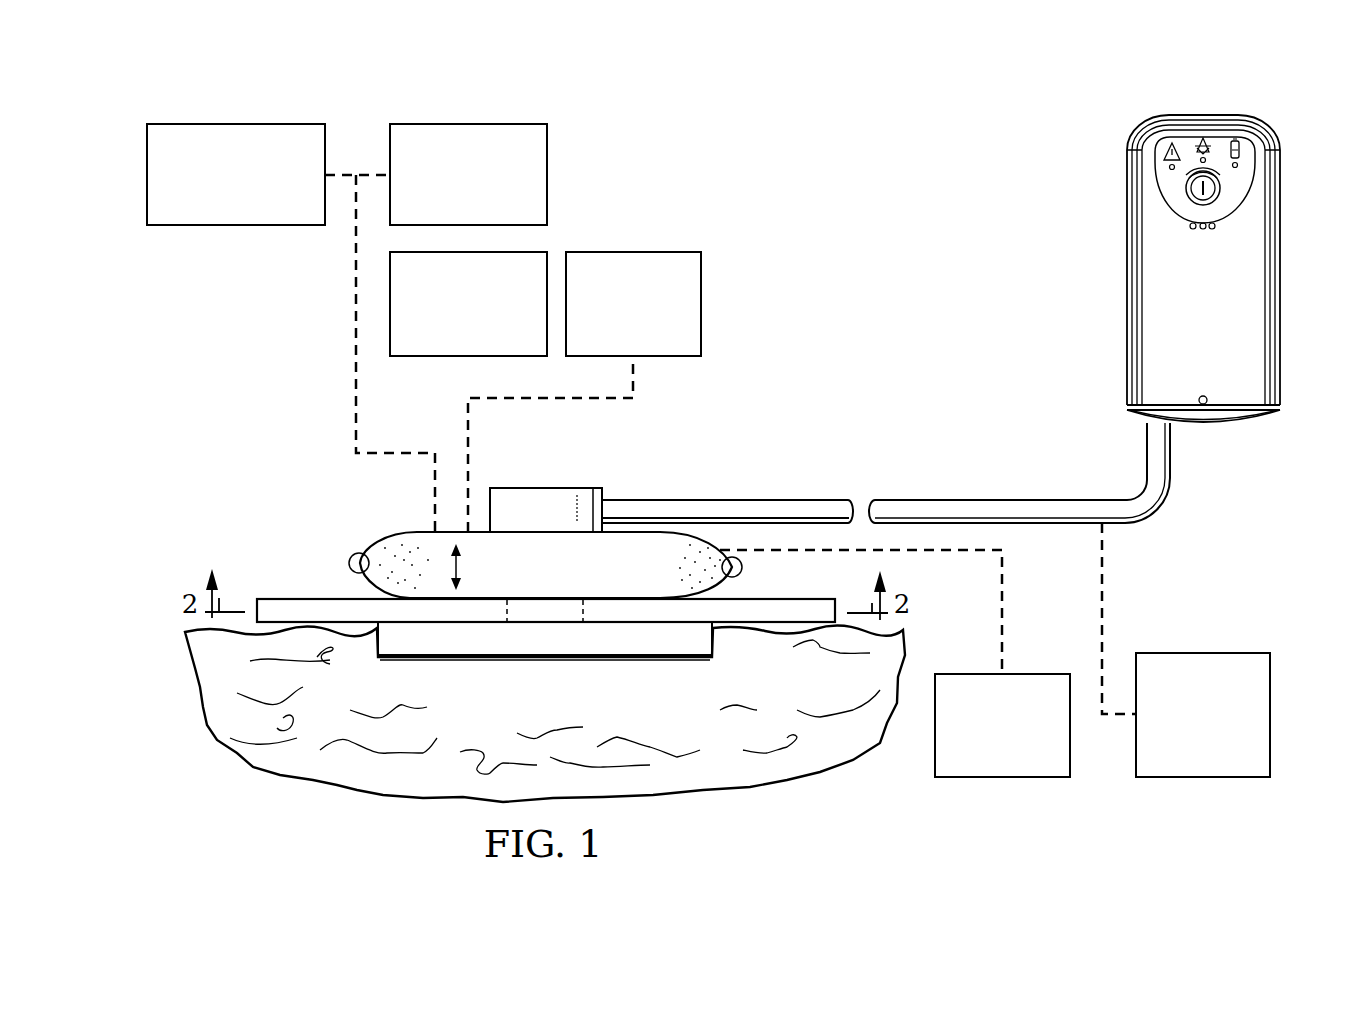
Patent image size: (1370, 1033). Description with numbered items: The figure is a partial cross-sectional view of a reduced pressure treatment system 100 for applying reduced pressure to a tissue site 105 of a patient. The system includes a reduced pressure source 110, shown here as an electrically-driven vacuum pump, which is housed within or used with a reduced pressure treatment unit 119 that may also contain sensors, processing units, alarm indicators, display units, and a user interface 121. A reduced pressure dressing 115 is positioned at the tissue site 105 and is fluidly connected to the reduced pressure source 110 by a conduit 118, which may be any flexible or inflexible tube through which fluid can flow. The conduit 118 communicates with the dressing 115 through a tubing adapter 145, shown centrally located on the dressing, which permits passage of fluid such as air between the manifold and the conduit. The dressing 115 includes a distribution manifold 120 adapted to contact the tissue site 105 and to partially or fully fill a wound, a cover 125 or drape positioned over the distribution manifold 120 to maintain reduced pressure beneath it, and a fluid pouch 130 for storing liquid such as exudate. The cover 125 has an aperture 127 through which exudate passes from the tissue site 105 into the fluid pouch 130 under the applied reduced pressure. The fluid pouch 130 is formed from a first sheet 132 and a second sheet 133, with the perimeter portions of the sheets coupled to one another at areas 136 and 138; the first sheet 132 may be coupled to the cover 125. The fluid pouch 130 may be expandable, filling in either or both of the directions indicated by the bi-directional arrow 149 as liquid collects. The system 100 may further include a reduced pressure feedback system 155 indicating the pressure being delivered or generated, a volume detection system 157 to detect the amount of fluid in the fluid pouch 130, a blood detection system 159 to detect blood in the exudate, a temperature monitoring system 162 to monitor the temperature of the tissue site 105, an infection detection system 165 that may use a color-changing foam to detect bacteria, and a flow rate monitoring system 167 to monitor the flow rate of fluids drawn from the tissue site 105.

The reduced pressure treatment system 100 is at (1032, 91).
The tissue site 105 is at (513, 655).
The reduced pressure source 110 is at (1253, 352).
The reduced pressure dressing 115 is at (301, 458).
The conduit 118 is at (945, 500).
The reduced pressure treatment unit 119 is at (1268, 105).
The distribution manifold 120 is at (622, 652).
The user interface 121 is at (1240, 180).
The cover 125 is at (275, 598).
The aperture 127 is at (508, 601).
The fluid pouch 130 is at (590, 582).
The first sheet 132 is at (378, 593).
The second sheet 133 is at (412, 532).
The area 136 is at (343, 552).
The area 138 is at (749, 580).
The tubing adapter 145 is at (518, 488).
The bi-directional arrow 149 is at (462, 568).
The reduced pressure feedback system 155 is at (1205, 777).
The volume detection system 157 is at (1013, 777).
The blood detection system 159 is at (668, 252).
The temperature monitoring system 162 is at (227, 124).
The infection detection system 165 is at (448, 124).
The flow rate monitoring system 167 is at (437, 356).